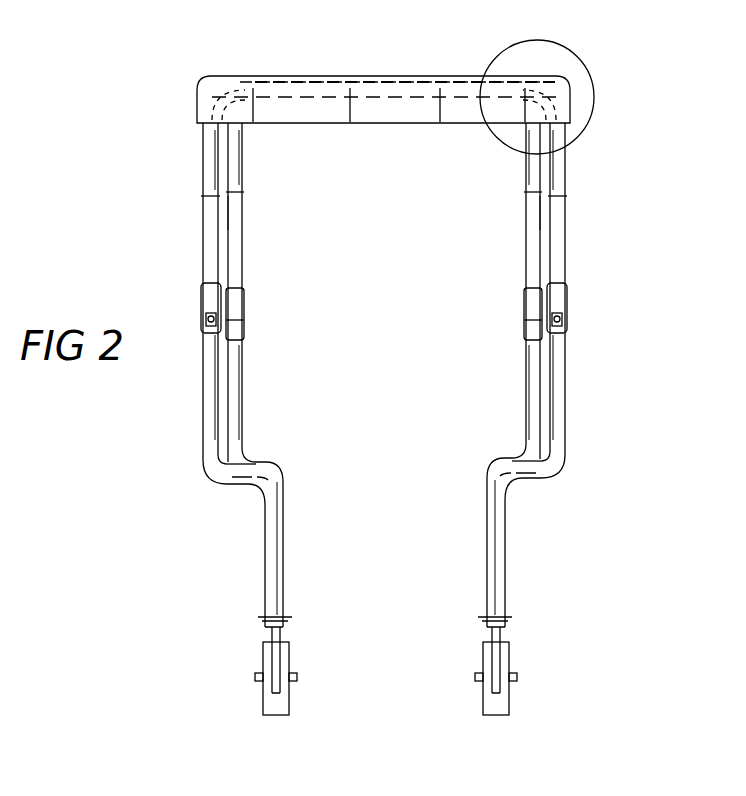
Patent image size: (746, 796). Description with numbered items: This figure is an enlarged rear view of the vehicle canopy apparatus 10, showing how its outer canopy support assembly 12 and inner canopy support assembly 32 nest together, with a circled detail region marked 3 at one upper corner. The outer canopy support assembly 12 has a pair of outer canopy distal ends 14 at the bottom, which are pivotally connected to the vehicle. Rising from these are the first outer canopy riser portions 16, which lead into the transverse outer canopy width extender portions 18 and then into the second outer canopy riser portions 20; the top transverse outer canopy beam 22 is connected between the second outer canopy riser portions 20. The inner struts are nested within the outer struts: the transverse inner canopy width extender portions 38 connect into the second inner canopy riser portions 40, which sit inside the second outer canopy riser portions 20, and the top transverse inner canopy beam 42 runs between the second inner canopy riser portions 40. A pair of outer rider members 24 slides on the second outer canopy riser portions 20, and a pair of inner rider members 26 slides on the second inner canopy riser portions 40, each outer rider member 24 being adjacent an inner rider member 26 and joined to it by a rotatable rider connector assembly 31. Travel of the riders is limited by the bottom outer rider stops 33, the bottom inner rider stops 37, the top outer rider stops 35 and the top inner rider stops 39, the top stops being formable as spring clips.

The section detail indicator for FIG. 3 is at (594, 90).
The vehicle canopy apparatus 10 is at (155, 105).
The outer canopy support assembly 12 is at (570, 480).
The outer canopy distal ends 14 is at (270, 648).
The first outer canopy riser portions 16 is at (270, 567).
The transverse outer canopy width extender portions 18 is at (232, 483).
The second outer canopy riser portions 20 is at (206, 387).
The top transverse outer canopy beam 22 is at (540, 78).
The outer rider members 24 is at (206, 292).
The inner rider members 26 is at (243, 300).
The rotatable rider connector assemblies 31 is at (228, 285).
The inner canopy support assembly 32 is at (252, 364).
The bottom outer rider stops 33 is at (205, 328).
The top outer rider stops 35 is at (203, 193).
The bottom inner rider stops 37 is at (243, 330).
The transverse inner canopy width extender portions 38 is at (252, 457).
The top inner rider stops 39 is at (246, 191).
The second inner canopy riser portions 40 is at (240, 203).
The top transverse inner canopy beam 42 is at (288, 90).